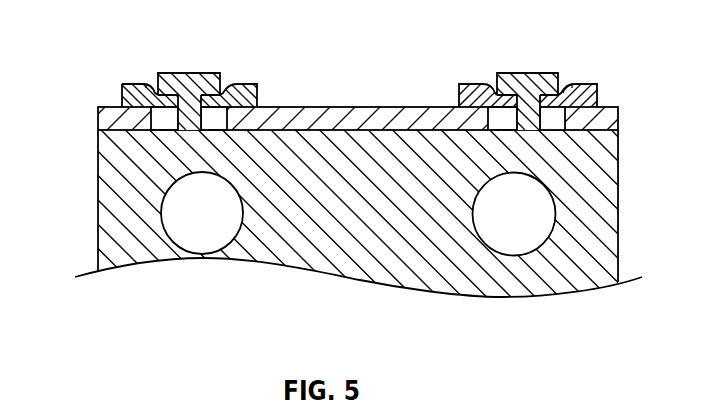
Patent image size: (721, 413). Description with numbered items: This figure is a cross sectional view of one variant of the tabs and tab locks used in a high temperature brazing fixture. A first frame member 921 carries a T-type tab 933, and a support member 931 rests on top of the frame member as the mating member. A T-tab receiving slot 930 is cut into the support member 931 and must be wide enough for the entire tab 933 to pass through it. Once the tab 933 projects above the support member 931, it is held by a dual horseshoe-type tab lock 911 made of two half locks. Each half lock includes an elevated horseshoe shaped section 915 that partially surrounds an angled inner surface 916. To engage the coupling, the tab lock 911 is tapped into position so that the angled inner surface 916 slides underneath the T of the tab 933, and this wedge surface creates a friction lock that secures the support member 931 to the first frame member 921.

The dual horseshoe-type tab lock 911 is at (258, 92).
The elevated horseshoe shaped section 915 is at (128, 84).
The angled inner surface 916 is at (152, 88).
The first frame member 921 is at (98, 193).
The T-tab receiving slot 930 is at (553, 125).
The support member 931 is at (98, 118).
The T-type tab 933 is at (192, 74).